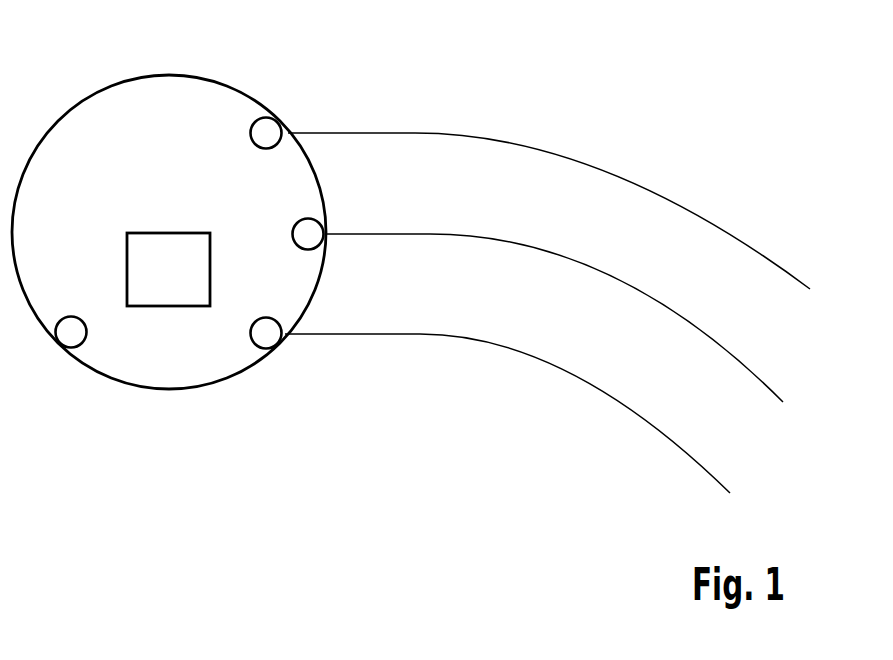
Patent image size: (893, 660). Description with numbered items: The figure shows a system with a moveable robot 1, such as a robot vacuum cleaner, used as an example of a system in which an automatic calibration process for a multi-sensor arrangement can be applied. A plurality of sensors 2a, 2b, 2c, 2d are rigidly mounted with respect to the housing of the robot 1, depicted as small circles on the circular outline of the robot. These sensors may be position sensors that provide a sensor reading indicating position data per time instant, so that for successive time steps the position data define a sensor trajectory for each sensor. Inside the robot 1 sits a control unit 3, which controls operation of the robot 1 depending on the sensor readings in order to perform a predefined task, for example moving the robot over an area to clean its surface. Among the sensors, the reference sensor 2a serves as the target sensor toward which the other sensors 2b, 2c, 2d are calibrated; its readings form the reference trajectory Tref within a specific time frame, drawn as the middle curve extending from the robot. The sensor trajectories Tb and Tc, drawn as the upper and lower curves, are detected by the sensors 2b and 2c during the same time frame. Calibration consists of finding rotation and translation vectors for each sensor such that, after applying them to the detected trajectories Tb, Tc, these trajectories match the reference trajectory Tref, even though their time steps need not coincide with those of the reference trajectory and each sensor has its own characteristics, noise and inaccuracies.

The moveable robot 1 is at (170, 75).
The reference sensor 2a is at (318, 246).
The sensor 2b is at (261, 118).
The sensor 2c is at (262, 349).
The sensor 2d is at (76, 347).
The control unit 3 is at (159, 306).
The sensor trajectory Tb is at (412, 132).
The reference trajectory Tref is at (440, 233).
The sensor trajectory Tc is at (391, 336).